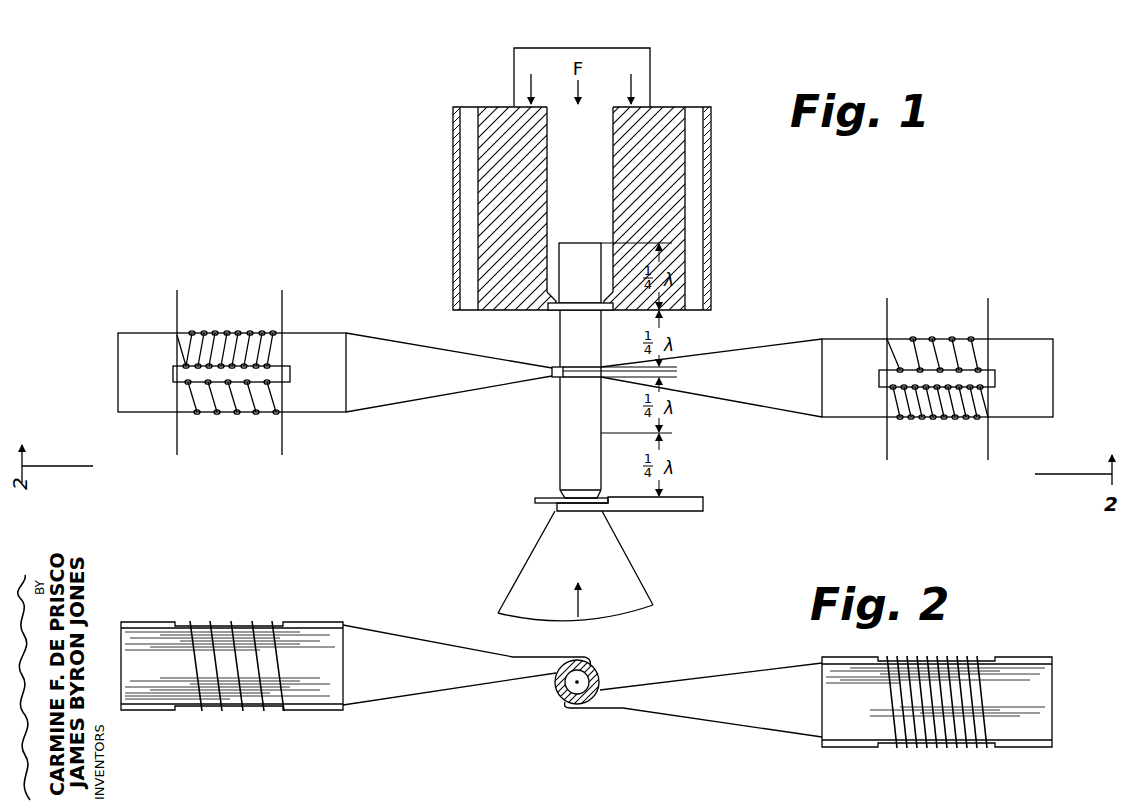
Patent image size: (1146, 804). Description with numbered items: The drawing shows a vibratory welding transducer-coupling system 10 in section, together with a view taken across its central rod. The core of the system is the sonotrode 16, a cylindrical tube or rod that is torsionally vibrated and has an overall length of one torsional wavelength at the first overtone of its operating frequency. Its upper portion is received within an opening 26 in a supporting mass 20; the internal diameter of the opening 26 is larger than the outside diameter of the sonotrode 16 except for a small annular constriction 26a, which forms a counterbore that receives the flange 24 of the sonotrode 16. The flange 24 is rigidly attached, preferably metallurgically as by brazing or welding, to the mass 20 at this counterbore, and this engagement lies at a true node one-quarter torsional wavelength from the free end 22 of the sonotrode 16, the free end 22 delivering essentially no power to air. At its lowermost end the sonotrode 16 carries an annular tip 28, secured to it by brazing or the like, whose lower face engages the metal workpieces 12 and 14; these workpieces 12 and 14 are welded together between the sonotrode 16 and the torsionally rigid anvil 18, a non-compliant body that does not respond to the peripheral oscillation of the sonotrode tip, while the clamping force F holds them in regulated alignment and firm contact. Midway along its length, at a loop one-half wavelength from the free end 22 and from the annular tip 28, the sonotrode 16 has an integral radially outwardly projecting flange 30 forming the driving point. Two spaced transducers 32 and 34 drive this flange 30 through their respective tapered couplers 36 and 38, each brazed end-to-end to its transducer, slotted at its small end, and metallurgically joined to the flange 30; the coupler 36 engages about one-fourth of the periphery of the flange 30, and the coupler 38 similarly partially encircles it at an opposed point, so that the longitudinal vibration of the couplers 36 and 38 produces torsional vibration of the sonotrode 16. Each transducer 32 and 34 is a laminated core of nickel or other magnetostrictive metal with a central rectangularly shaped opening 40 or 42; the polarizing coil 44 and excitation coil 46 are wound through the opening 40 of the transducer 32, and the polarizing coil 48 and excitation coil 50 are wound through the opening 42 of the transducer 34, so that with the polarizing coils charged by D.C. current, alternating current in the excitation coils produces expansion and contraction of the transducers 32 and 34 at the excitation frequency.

In FIG. 1, the vibratory welding transducer-coupling system 10 is at (490, 424).
In FIG. 1, the metal workpiece 12 is at (548, 503).
In FIG. 1, the metal workpiece 14 is at (663, 511).
In FIG. 1, the sonotrode 16 is at (566, 435).
In FIG. 2, the sonotrode 16 is at (600, 672).
In FIG. 1, the torsionally rigid anvil 18 is at (637, 583).
In FIG. 1, the mass 20 is at (711, 270).
In FIG. 1, the free end 22 is at (582, 243).
In FIG. 1, the flange 24 is at (578, 308).
In FIG. 1, the opening 26 is at (607, 140).
In FIG. 1, the annular constriction 26a is at (550, 297).
In FIG. 1, the annular tip 28 is at (548, 497).
In FIG. 1, the radially outwardly projecting flange 30 is at (555, 377).
In FIG. 2, the radially outwardly projecting flange 30 is at (556, 689).
In FIG. 1, the transducer 32 is at (135, 405).
In FIG. 2, the transducer 32 is at (315, 622).
In FIG. 1, the transducer 34 is at (1032, 420).
In FIG. 2, the transducer 34 is at (1012, 657).
In FIG. 1, the coupler 36 is at (400, 348).
In FIG. 2, the coupler 36 is at (432, 646).
In FIG. 1, the coupler 38 is at (783, 350).
In FIG. 2, the coupler 38 is at (760, 677).
In FIG. 1, the rectangularly shaped opening 40 is at (283, 370).
In FIG. 1, the rectangularly shaped opening 42 is at (987, 378).
In FIG. 1, the polarizing coil 44 is at (205, 333).
In FIG. 1, the excitation coil 46 is at (197, 415).
In FIG. 1, the polarizing coil 48 is at (955, 420).
In FIG. 1, the excitation coil 50 is at (933, 339).